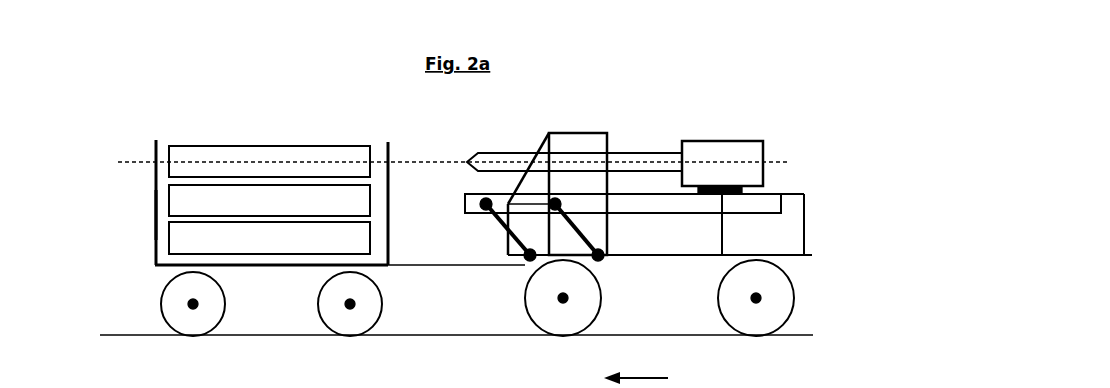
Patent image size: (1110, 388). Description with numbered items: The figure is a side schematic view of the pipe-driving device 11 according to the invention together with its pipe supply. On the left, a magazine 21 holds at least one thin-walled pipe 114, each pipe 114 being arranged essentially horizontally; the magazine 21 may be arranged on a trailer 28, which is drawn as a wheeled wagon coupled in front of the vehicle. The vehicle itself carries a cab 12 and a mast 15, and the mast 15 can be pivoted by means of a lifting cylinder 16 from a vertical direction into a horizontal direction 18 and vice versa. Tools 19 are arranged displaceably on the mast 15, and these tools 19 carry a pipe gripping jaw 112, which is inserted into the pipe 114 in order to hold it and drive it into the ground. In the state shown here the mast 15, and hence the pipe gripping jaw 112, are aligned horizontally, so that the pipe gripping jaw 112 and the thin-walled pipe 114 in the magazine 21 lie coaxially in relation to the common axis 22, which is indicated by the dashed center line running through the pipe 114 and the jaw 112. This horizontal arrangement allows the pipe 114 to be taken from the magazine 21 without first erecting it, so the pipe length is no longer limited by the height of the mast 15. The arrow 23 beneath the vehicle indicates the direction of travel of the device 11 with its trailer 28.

The drilling device 11 is at (491, 196).
The cab 12 is at (592, 142).
The pipe gripping jaw 112 is at (643, 158).
The mast 15 is at (640, 208).
The lifting cylinder 16 is at (598, 255).
The horizontal direction 18 is at (780, 242).
The tools 19 is at (750, 150).
The magazine 21 is at (276, 205).
The axis 22 is at (770, 163).
The direction of travel 23 is at (651, 379).
The trailer 28 is at (153, 208).
The thin-walled pipe 114 is at (250, 155).